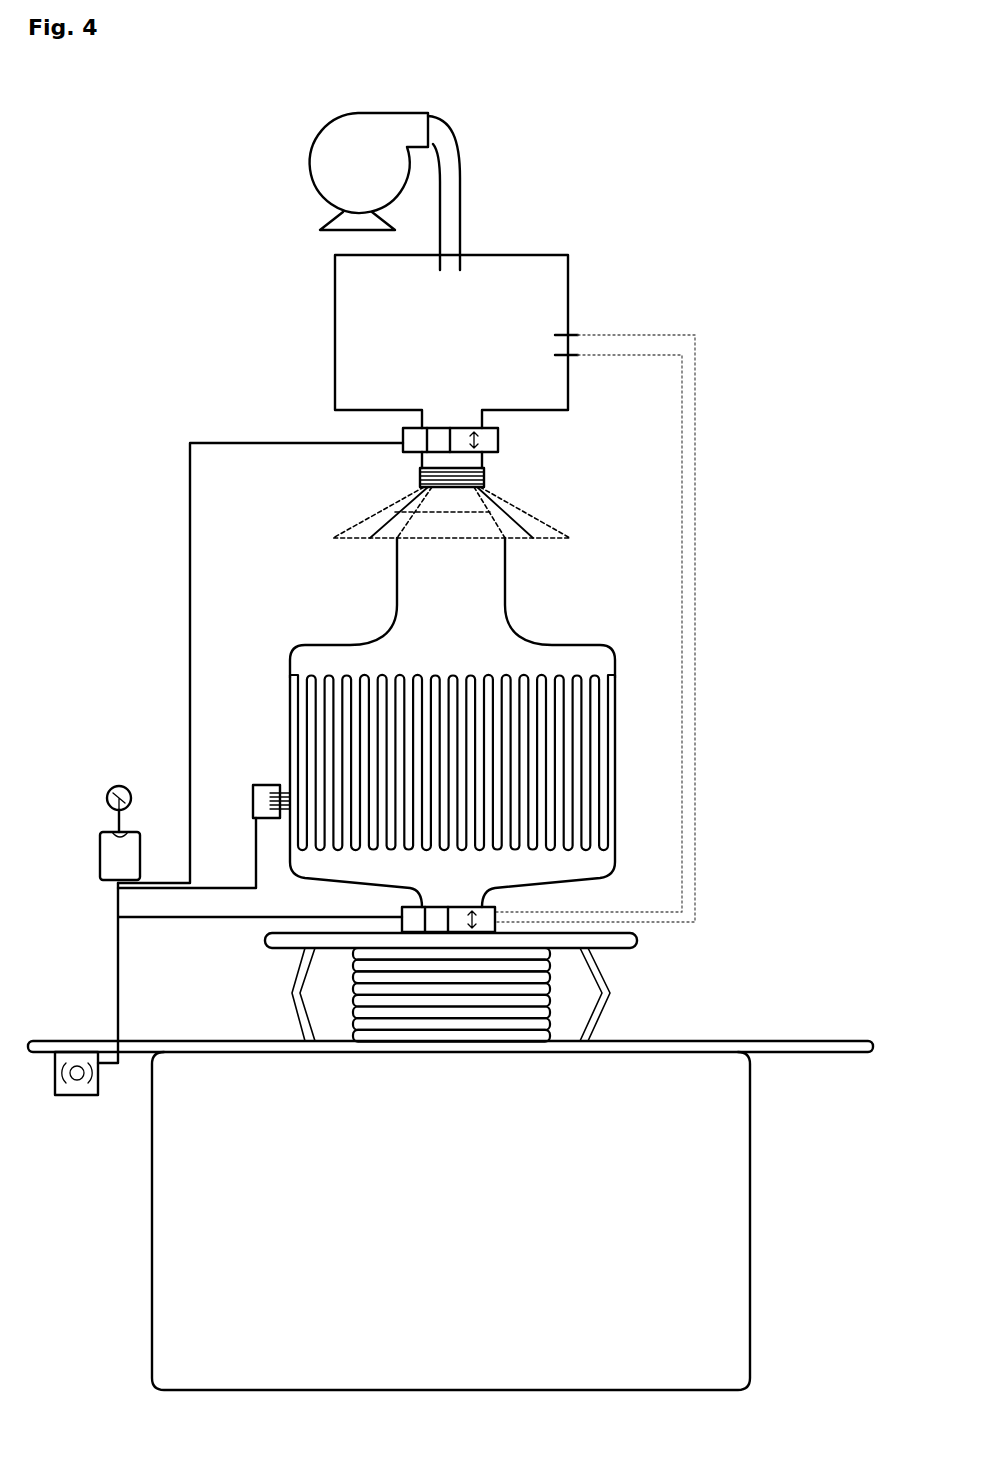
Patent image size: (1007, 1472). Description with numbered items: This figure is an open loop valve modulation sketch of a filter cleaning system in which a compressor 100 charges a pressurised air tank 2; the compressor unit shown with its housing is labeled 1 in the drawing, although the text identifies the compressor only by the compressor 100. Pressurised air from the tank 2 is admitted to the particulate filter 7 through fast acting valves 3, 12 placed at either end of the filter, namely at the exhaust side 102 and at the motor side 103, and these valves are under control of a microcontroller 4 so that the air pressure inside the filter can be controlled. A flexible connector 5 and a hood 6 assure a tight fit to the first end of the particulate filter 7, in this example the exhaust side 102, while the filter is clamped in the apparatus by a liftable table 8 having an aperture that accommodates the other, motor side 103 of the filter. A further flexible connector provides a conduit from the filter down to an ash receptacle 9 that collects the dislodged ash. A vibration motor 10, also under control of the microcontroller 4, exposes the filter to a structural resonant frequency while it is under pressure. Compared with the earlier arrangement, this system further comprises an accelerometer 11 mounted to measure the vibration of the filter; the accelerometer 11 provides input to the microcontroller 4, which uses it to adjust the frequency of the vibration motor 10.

The blower 1 is at (301, 160).
The compressor 100 is at (348, 173).
The pressurised air tank 2 is at (332, 300).
The fast acting valve 12 is at (500, 458).
The flexible connector 5 is at (418, 472).
The hood 6 is at (331, 538).
The particulate filter 7 is at (286, 736).
The exhaust side 102 is at (480, 552).
The motor side 103 is at (483, 902).
The accelerometer 11 is at (252, 805).
The microcontroller 4 is at (98, 848).
The fast acting valve 3 is at (400, 900).
The liftable table 8 is at (263, 940).
The ash receptacle 9 is at (150, 1170).
The vibration motor 10 is at (99, 1095).